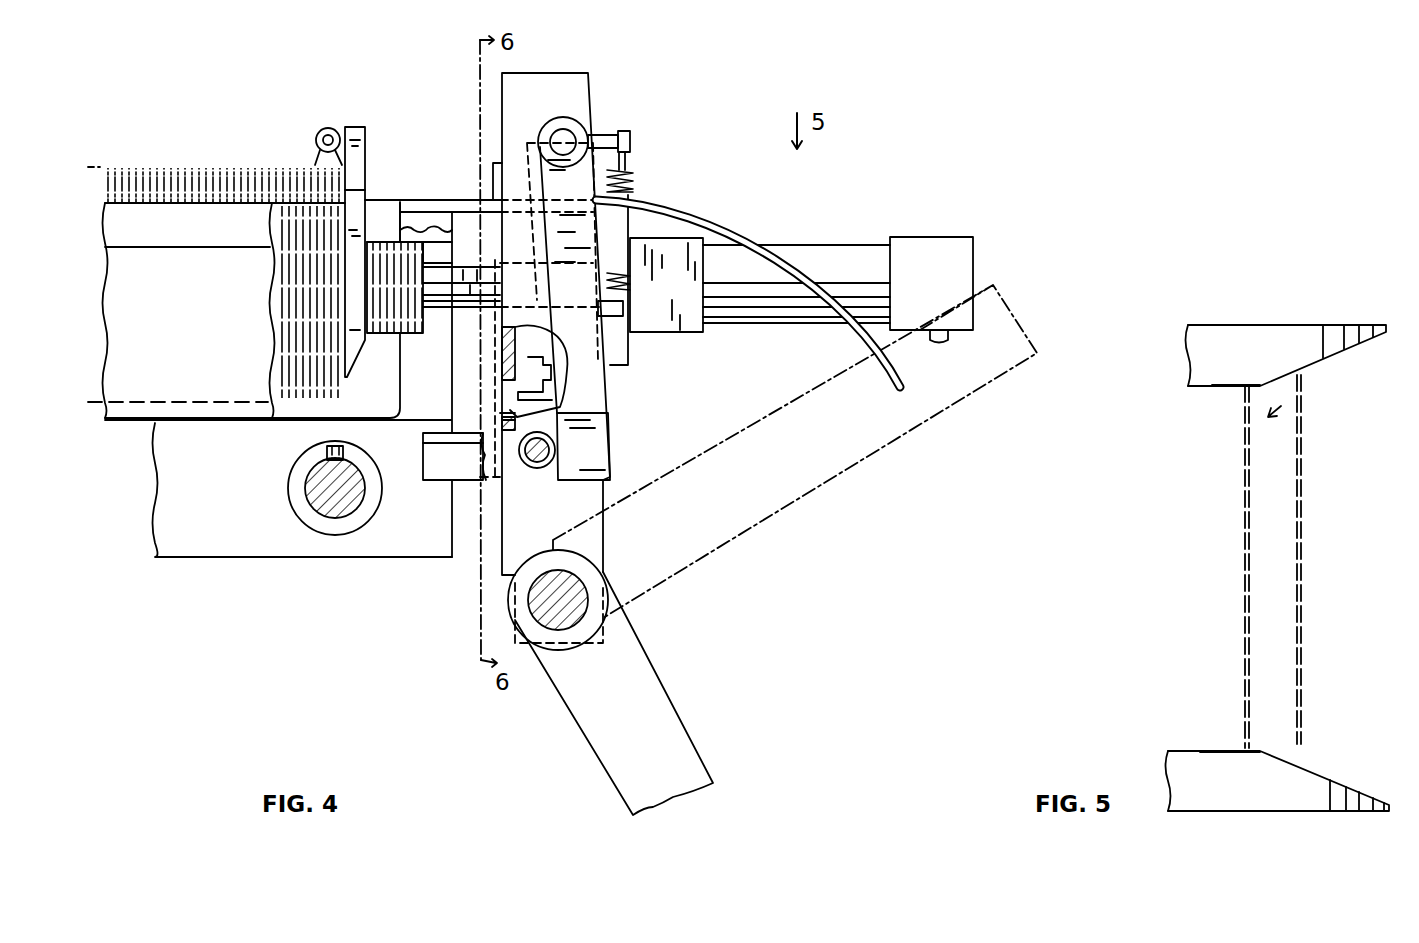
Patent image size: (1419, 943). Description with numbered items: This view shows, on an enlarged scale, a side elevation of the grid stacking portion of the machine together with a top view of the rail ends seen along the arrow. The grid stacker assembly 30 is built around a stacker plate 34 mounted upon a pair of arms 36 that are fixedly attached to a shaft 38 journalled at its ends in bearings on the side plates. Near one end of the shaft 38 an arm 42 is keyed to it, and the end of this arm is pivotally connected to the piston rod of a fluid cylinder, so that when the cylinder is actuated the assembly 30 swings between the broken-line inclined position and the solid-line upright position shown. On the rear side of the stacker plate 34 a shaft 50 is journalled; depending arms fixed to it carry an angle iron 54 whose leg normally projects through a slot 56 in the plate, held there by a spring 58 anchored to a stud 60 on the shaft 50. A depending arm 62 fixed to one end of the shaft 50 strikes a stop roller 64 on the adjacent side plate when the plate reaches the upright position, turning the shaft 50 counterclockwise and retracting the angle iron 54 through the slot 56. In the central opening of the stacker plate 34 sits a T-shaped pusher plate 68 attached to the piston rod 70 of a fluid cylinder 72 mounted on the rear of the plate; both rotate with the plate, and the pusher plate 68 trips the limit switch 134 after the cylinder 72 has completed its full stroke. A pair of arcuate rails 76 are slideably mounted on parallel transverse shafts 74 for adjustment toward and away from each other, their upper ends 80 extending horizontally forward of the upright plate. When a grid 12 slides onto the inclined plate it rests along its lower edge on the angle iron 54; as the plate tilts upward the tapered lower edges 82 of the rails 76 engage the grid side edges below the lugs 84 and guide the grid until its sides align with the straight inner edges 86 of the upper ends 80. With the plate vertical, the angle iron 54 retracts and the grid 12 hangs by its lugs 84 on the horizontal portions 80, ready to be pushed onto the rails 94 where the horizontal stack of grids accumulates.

In FIG. 5, the grid 12 is at (1303, 507).
In FIG. 4, the grid stacker assembly 30 is at (608, 72).
In FIG. 4, the stacker plate 34 is at (507, 75).
In FIG. 4, the arms 36 is at (591, 97).
In FIG. 4, the shaft 38 is at (577, 573).
In FIG. 4, the arm 42 is at (643, 663).
In FIG. 4, the shaft 50 is at (562, 138).
In FIG. 4, the angle iron 54 is at (508, 422).
In FIG. 4, the slot 56 is at (500, 387).
In FIG. 4, the spring 58 is at (630, 183).
In FIG. 4, the stud 60 is at (611, 135).
In FIG. 4, the depending arm 62 is at (610, 448).
In FIG. 4, the stop roller 64 is at (537, 468).
In FIG. 4, the pusher plate 68 is at (371, 352).
In FIG. 4, the piston rod 70 is at (442, 313).
In FIG. 4, the fluid cylinder 72 is at (832, 250).
In FIG. 4, the shafts 74 is at (342, 513).
In FIG. 4, the arcuate rails 76 is at (693, 218).
In FIG. 5, the arcuate rails 76 is at (1258, 326).
In FIG. 4, the upper ends 80 is at (427, 200).
In FIG. 5, the tapered lower edges 82 is at (1345, 352).
In FIG. 4, the lugs 84 is at (488, 163).
In FIG. 5, the straight inner edges 86 is at (1215, 386).
In FIG. 4, the rails 94 is at (223, 200).
In FIG. 4, the limit switch 134 is at (333, 126).